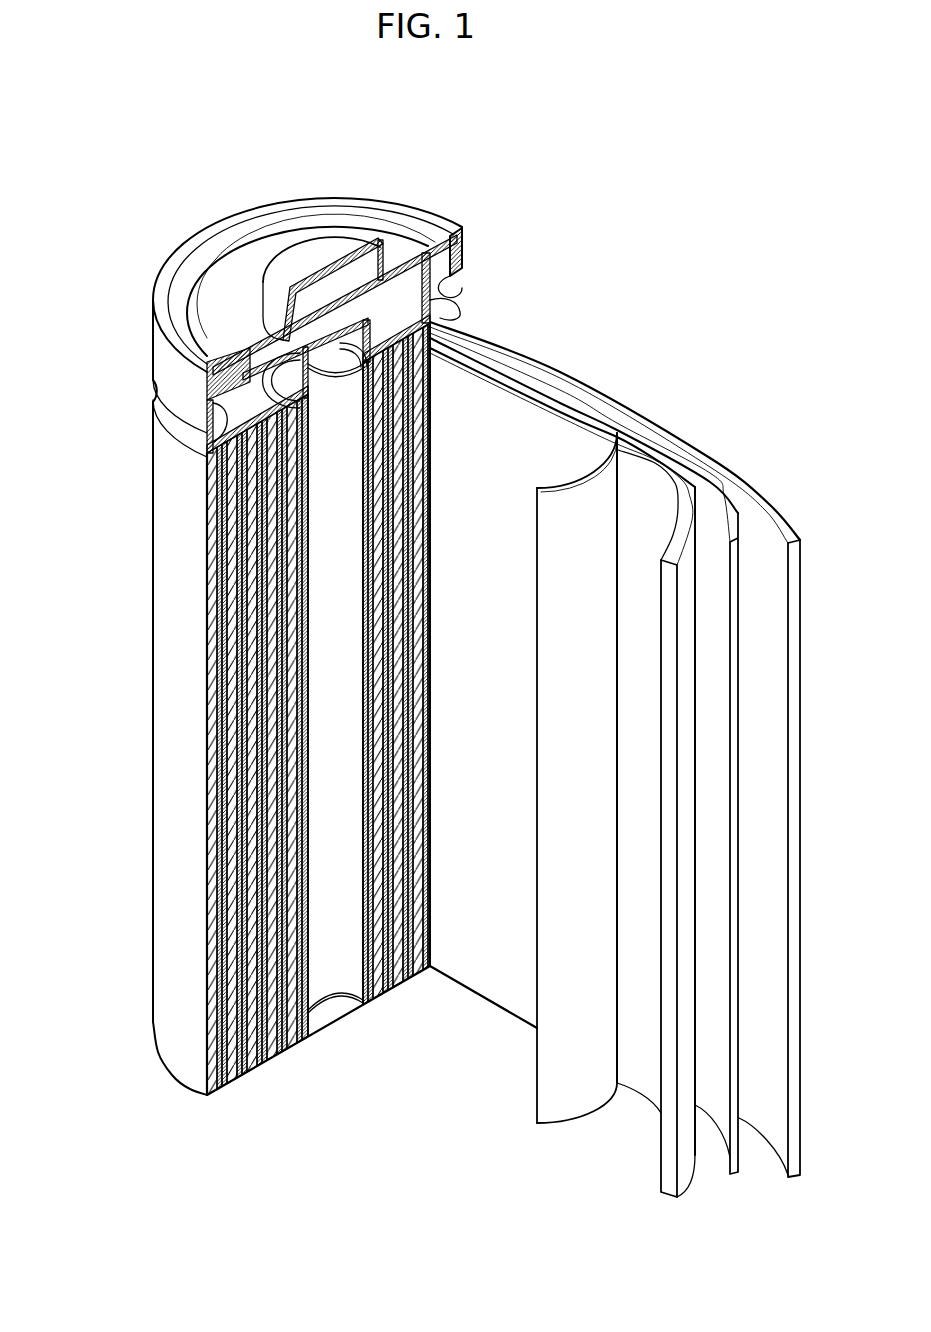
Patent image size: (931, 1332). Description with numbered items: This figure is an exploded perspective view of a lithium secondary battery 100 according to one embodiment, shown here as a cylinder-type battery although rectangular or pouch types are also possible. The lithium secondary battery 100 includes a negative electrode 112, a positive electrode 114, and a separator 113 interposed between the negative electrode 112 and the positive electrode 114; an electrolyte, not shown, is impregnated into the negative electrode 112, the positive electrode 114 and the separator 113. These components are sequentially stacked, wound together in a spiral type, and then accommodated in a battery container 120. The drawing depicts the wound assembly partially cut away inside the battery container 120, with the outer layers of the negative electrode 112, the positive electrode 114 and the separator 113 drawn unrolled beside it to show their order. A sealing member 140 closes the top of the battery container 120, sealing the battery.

The lithium secondary battery 100 is at (612, 144).
The negative electrode 112 is at (770, 500).
The separator 113 is at (578, 492).
The positive electrode 114 is at (680, 498).
The battery container 120 is at (160, 703).
The sealing member 140 is at (300, 250).